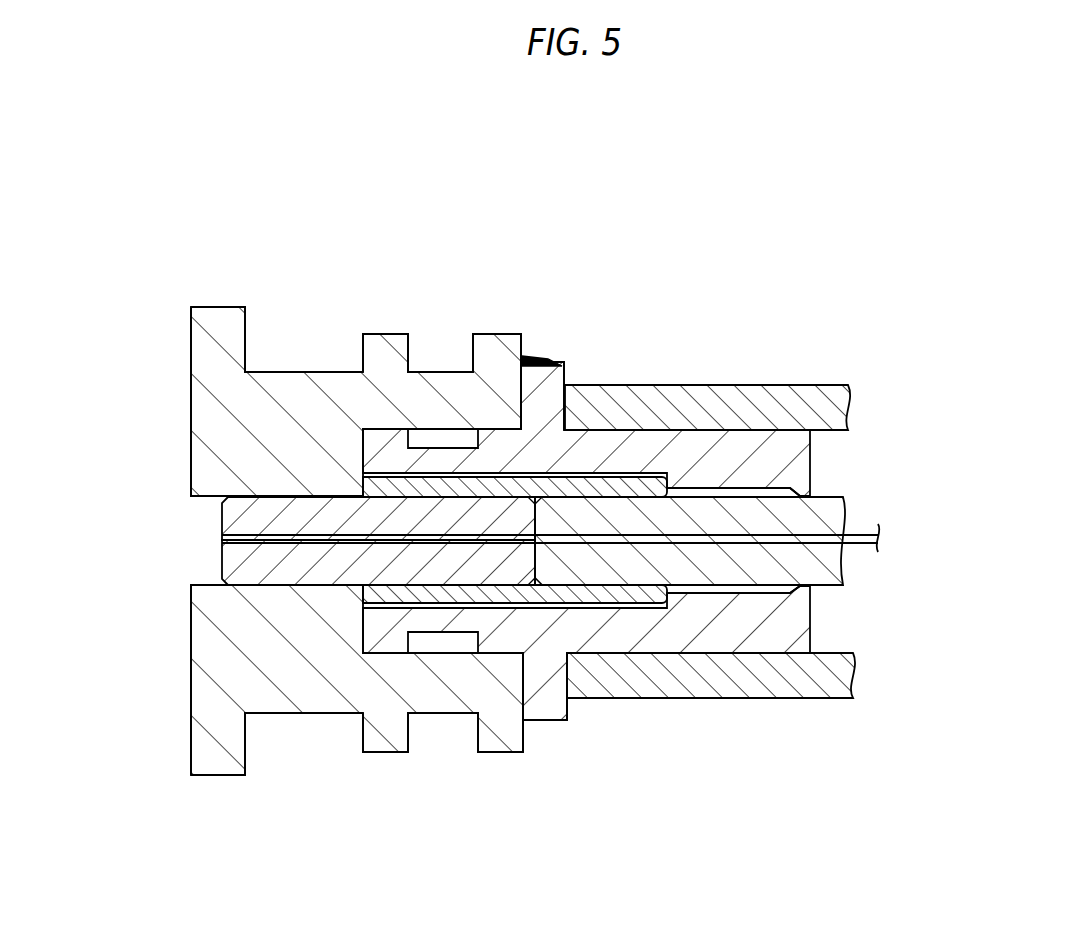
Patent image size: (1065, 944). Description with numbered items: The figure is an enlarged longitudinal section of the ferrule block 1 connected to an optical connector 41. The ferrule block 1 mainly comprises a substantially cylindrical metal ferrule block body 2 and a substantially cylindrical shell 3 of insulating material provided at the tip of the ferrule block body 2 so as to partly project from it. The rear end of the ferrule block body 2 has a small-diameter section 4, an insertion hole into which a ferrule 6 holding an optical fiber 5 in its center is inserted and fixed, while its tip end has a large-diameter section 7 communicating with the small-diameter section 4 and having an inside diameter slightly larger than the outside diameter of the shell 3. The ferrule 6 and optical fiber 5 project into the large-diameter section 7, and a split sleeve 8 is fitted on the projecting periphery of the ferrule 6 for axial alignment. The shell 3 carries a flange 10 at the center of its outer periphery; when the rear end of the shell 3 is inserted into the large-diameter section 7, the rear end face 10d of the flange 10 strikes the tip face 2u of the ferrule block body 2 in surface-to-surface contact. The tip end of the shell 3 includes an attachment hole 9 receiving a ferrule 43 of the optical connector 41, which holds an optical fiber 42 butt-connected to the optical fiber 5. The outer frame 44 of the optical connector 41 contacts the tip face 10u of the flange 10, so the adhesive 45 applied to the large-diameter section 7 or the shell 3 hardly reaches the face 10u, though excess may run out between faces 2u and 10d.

The ferrule block 1 is at (399, 545).
The ferrule block body 2 is at (287, 377).
The one end face (tip face) of the ferrule block body 2u is at (523, 688).
The shell 3 is at (677, 465).
The small-diameter section 4 is at (205, 503).
The optical fiber 5 is at (302, 540).
The ferrule 6 is at (222, 567).
The large-diameter section 7 is at (393, 436).
The sleeve 8 is at (660, 607).
The attachment hole 9 is at (810, 482).
The flange 10 is at (565, 367).
The one end face (tip face) of the flange 10u is at (567, 708).
The other end face (rear end face) of the flange 10d is at (523, 714).
The optical connector 41 is at (700, 555).
The optical fiber 42 is at (843, 580).
The ferrule 43 is at (825, 510).
The outer frame 44 is at (750, 393).
The adhesive 45 is at (525, 361).